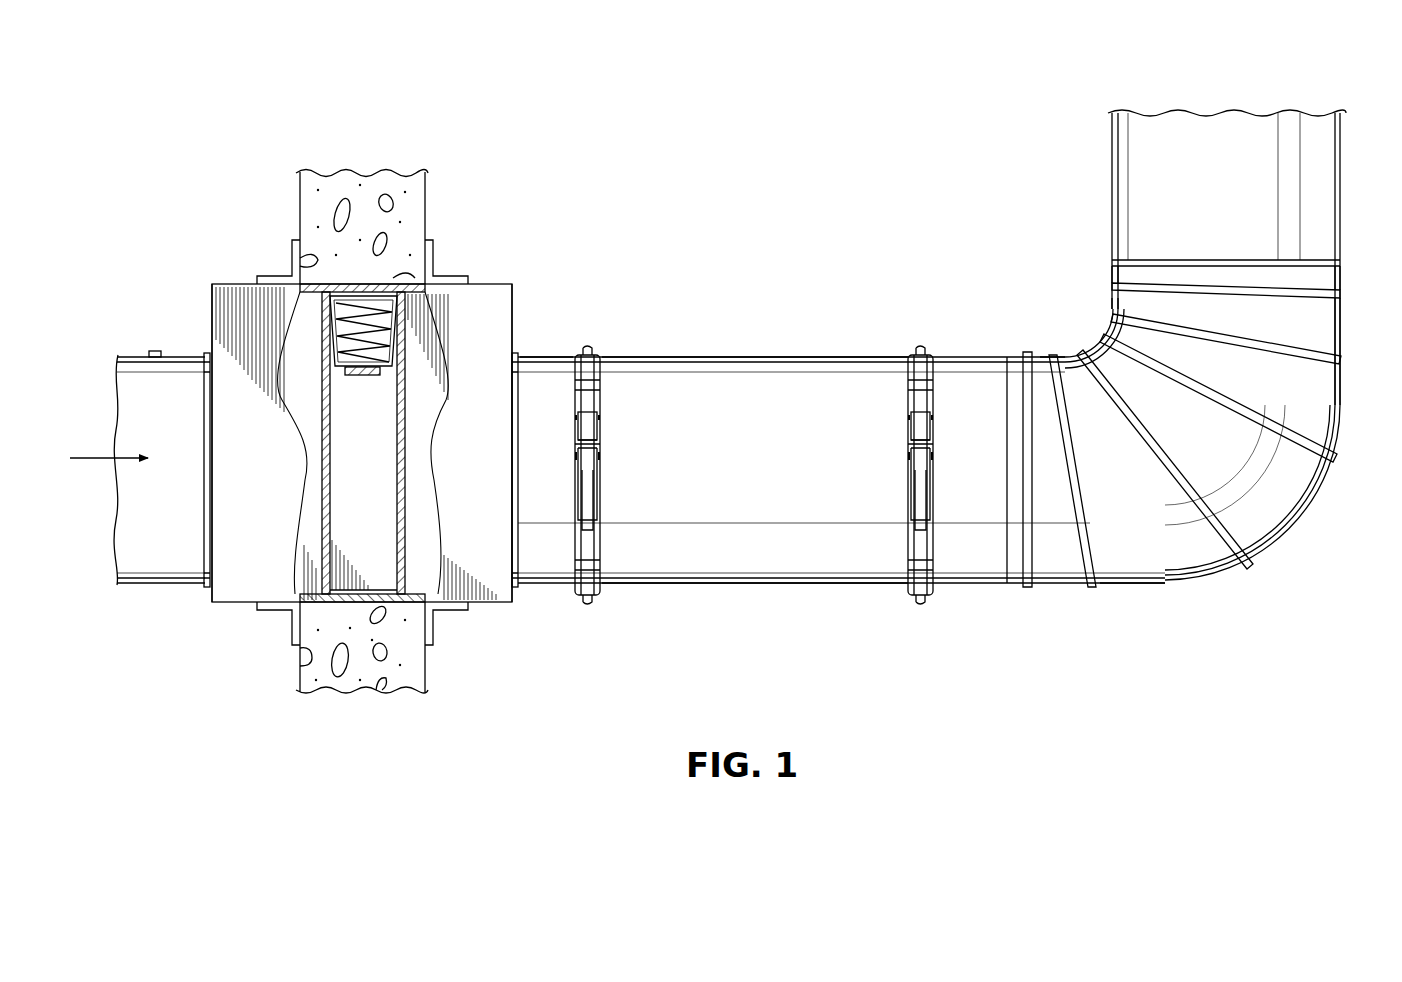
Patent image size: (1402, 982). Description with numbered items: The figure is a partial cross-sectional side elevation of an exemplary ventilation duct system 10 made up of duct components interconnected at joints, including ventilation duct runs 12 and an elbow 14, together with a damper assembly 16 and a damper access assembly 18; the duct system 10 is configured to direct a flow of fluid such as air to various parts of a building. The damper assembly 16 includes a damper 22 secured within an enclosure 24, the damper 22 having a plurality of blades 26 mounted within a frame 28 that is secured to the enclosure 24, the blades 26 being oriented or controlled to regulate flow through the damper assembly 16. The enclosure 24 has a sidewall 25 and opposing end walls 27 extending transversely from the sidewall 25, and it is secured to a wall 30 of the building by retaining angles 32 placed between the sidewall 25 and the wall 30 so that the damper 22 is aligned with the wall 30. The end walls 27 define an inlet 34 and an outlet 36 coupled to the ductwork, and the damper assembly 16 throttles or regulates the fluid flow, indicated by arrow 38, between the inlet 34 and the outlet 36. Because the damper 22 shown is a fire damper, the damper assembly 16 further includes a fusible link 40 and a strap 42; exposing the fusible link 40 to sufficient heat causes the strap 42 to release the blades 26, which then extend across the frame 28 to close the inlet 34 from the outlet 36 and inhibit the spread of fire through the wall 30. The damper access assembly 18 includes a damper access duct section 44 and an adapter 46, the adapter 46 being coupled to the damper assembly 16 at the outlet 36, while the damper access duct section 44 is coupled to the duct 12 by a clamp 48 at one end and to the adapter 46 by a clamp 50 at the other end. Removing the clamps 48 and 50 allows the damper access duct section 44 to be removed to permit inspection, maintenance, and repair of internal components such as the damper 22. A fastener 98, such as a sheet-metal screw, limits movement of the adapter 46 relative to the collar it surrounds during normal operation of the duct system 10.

The ventilation duct system 10 is at (1283, 637).
The ventilation duct run 12 is at (178, 357).
The elbow 14 is at (1290, 530).
The damper assembly 16 is at (215, 282).
The damper access assembly 18 is at (844, 590).
The damper 22 is at (320, 450).
The enclosure 24 is at (508, 286).
The sidewall 25 is at (474, 414).
The blades 26 is at (378, 324).
The end walls 27 is at (212, 299).
The frame 28 is at (405, 452).
The wall 30 is at (425, 205).
The retaining angles 32 is at (292, 255).
The inlet 34 is at (207, 553).
The outlet 36 is at (522, 553).
The arrow 38 is at (95, 457).
The fusible link 40 is at (351, 376).
The strap 42 is at (336, 366).
The damper access duct section 44 is at (805, 357).
The adapter 46 is at (548, 357).
The clamp 48 is at (920, 350).
The clamp 50 is at (588, 350).
The fastener 98 is at (154, 351).